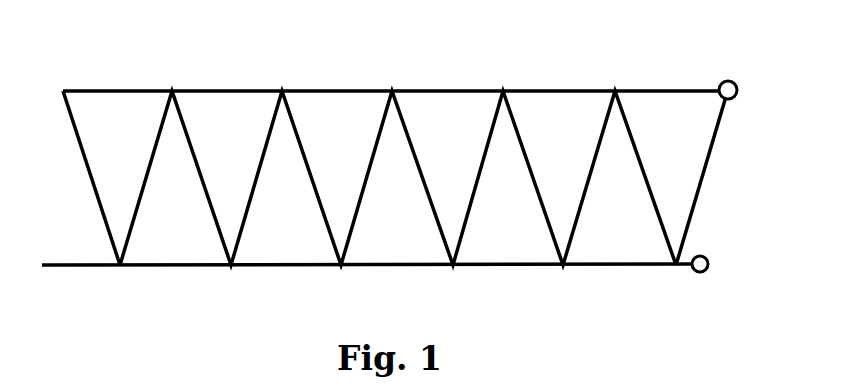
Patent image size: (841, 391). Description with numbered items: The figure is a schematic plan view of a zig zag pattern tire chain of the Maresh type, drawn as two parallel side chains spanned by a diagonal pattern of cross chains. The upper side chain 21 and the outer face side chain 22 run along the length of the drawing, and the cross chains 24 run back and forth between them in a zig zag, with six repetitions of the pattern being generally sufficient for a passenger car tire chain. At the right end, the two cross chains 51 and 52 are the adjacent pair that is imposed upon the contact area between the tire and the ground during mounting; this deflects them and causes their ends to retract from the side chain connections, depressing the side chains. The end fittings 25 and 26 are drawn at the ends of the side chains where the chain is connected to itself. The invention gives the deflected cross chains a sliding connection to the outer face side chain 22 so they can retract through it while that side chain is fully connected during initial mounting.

The upper rail 21 is at (555, 58).
The outer face side chain 22 is at (507, 273).
The zigzag diagonal members 24 is at (352, 185).
The upper end pivot 25 is at (772, 62).
The lower end pivot 26 is at (758, 250).
The cross chain 51 is at (715, 157).
The cross chain 52 is at (80, 158).